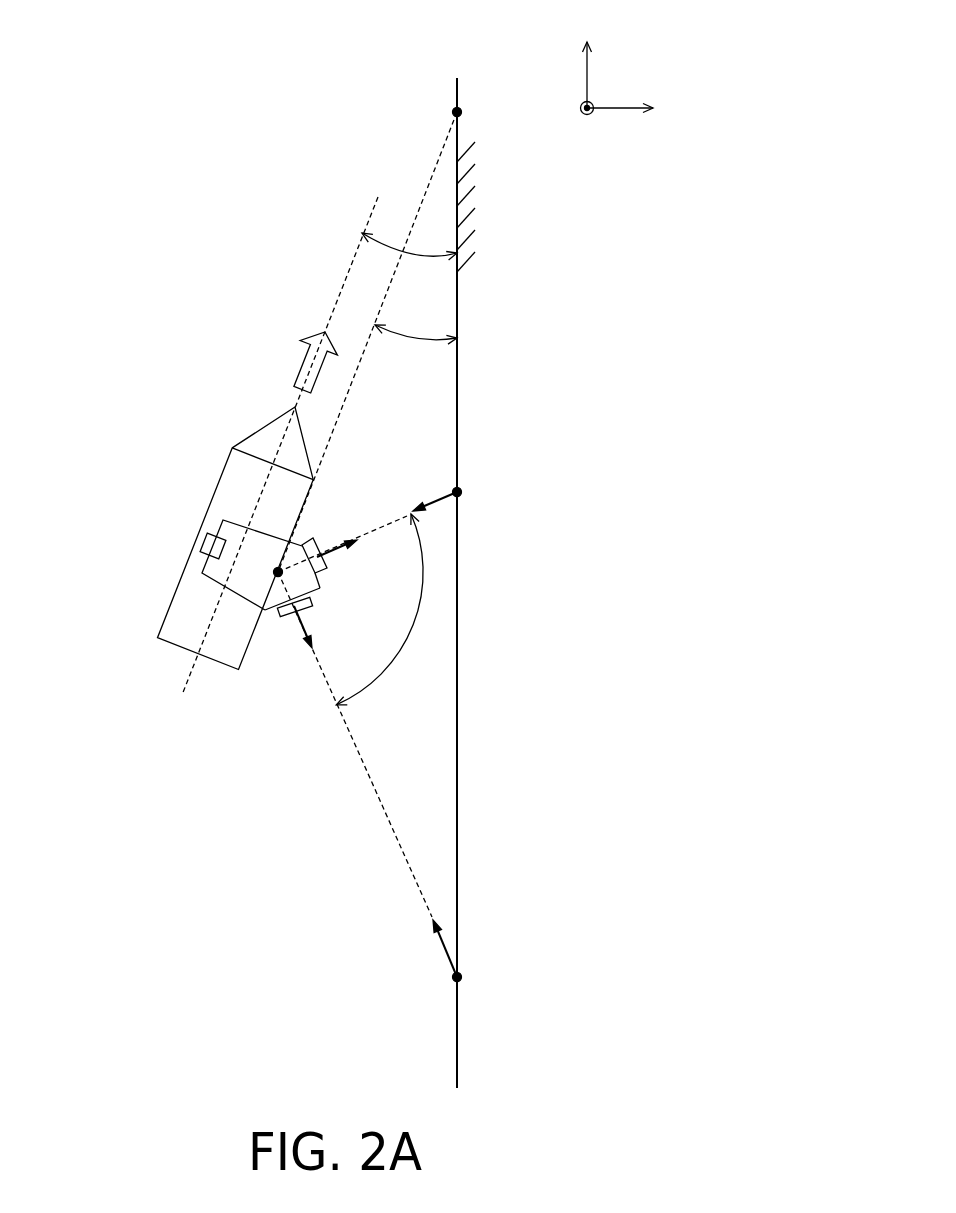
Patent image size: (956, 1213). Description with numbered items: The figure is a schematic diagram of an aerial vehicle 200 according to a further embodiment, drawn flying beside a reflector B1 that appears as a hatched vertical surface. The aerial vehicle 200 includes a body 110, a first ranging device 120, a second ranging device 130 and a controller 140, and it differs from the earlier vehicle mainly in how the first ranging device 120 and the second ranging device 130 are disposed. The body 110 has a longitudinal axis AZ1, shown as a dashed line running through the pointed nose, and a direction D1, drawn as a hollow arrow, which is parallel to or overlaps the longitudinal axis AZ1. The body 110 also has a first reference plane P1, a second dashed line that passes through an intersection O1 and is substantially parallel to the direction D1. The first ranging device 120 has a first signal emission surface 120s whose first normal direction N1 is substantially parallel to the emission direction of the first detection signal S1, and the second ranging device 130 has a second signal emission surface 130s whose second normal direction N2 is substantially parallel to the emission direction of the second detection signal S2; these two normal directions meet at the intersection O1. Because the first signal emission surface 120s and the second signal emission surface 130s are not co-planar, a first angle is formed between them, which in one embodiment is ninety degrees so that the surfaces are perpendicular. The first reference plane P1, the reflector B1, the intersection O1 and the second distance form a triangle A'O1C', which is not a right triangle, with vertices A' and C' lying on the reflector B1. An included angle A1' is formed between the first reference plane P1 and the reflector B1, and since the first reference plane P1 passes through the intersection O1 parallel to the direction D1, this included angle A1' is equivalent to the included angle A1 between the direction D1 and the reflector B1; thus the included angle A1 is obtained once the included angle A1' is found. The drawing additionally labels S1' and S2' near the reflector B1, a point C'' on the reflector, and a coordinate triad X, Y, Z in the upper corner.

The aerial vehicle 200 is at (160, 353).
The body 110 is at (217, 490).
The first ranging device 120 is at (321, 583).
The first signal emission surface 120s is at (326, 563).
The second ranging device 130 is at (314, 603).
The second signal emission surface 130s is at (305, 617).
The controller 140 is at (195, 541).
The direction D1 is at (311, 347).
The longitudinal axis AZ1 is at (220, 600).
The first reference plane P1 is at (340, 412).
The intersection O1 is at (278, 572).
The first normal direction N1 is at (406, 512).
The second normal direction N2 is at (352, 742).
The first detection signal S1 is at (356, 508).
The second detection signal S2 is at (284, 663).
The first reflected beam S1' is at (465, 522).
The second reflected beam S2' is at (413, 954).
The reflector B1 is at (457, 367).
The triangle vertex A' is at (473, 109).
The first reflection point C'' is at (473, 493).
The triangle vertex C' is at (472, 978).
The included angle A1 is at (409, 232).
The included angle A1' is at (416, 323).
The X axis X is at (632, 109).
The Y axis Y is at (586, 59).
The Z axis Z is at (586, 124).